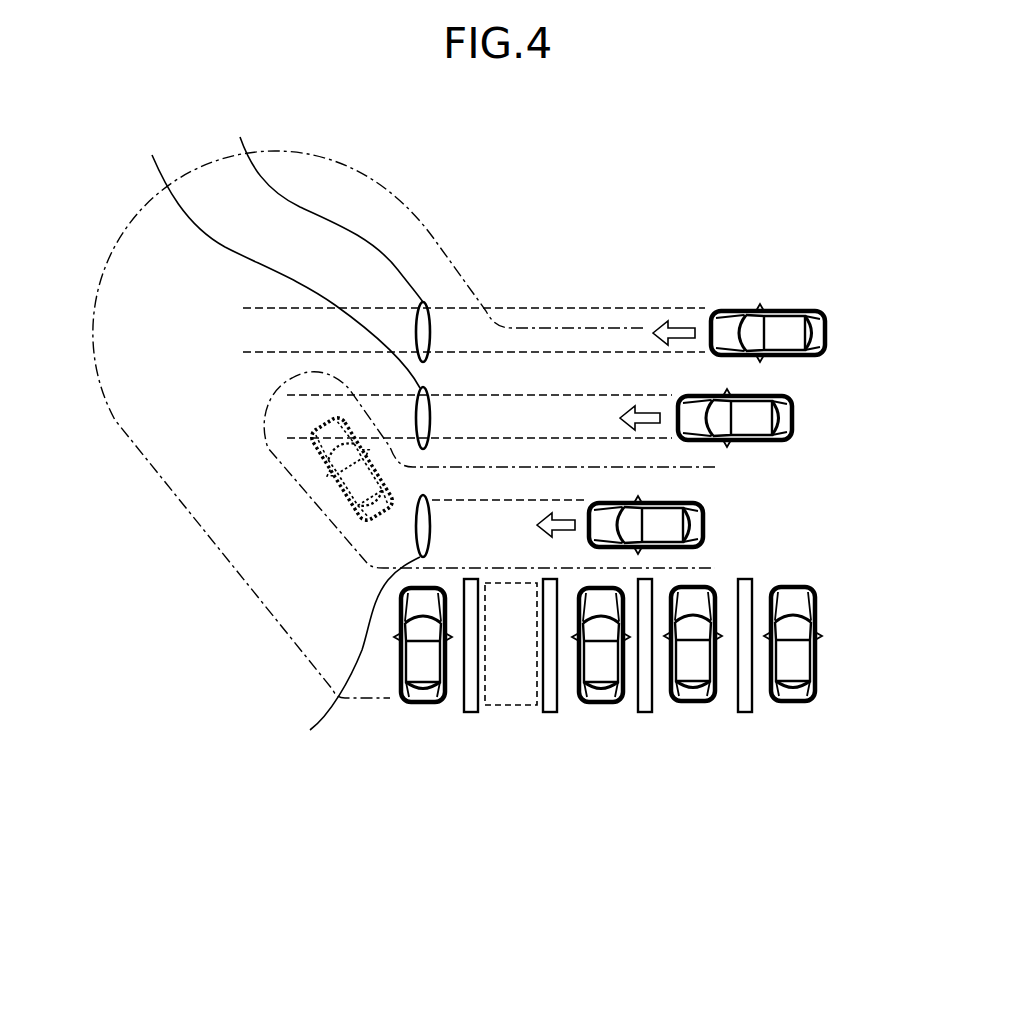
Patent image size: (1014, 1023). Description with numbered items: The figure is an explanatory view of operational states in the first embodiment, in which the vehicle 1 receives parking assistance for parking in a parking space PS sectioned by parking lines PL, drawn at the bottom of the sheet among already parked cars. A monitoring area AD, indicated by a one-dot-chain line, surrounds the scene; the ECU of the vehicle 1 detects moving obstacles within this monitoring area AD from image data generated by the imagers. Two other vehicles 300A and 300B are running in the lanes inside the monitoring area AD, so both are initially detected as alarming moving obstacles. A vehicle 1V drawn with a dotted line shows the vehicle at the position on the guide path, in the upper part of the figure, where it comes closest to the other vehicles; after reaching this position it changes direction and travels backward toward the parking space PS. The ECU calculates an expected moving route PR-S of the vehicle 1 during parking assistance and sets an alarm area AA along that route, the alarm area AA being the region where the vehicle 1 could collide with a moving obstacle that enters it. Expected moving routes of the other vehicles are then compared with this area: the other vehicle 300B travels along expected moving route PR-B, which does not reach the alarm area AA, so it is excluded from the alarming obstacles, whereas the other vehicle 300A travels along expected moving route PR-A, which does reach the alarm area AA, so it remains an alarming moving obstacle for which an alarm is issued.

The vehicle 1 is at (705, 521).
The other vehicle 300A is at (795, 416).
The other vehicle 300B is at (828, 330).
The monitoring area AD is at (375, 178).
The alarm area AA is at (263, 422).
The vehicle 1V is at (586, 547).
The expected moving route PR-A is at (272, 259).
The expected moving route PR-B is at (317, 207).
The expected moving route PR-S is at (351, 661).
The parking lines PL is at (471, 712).
The parking space PS is at (508, 704).